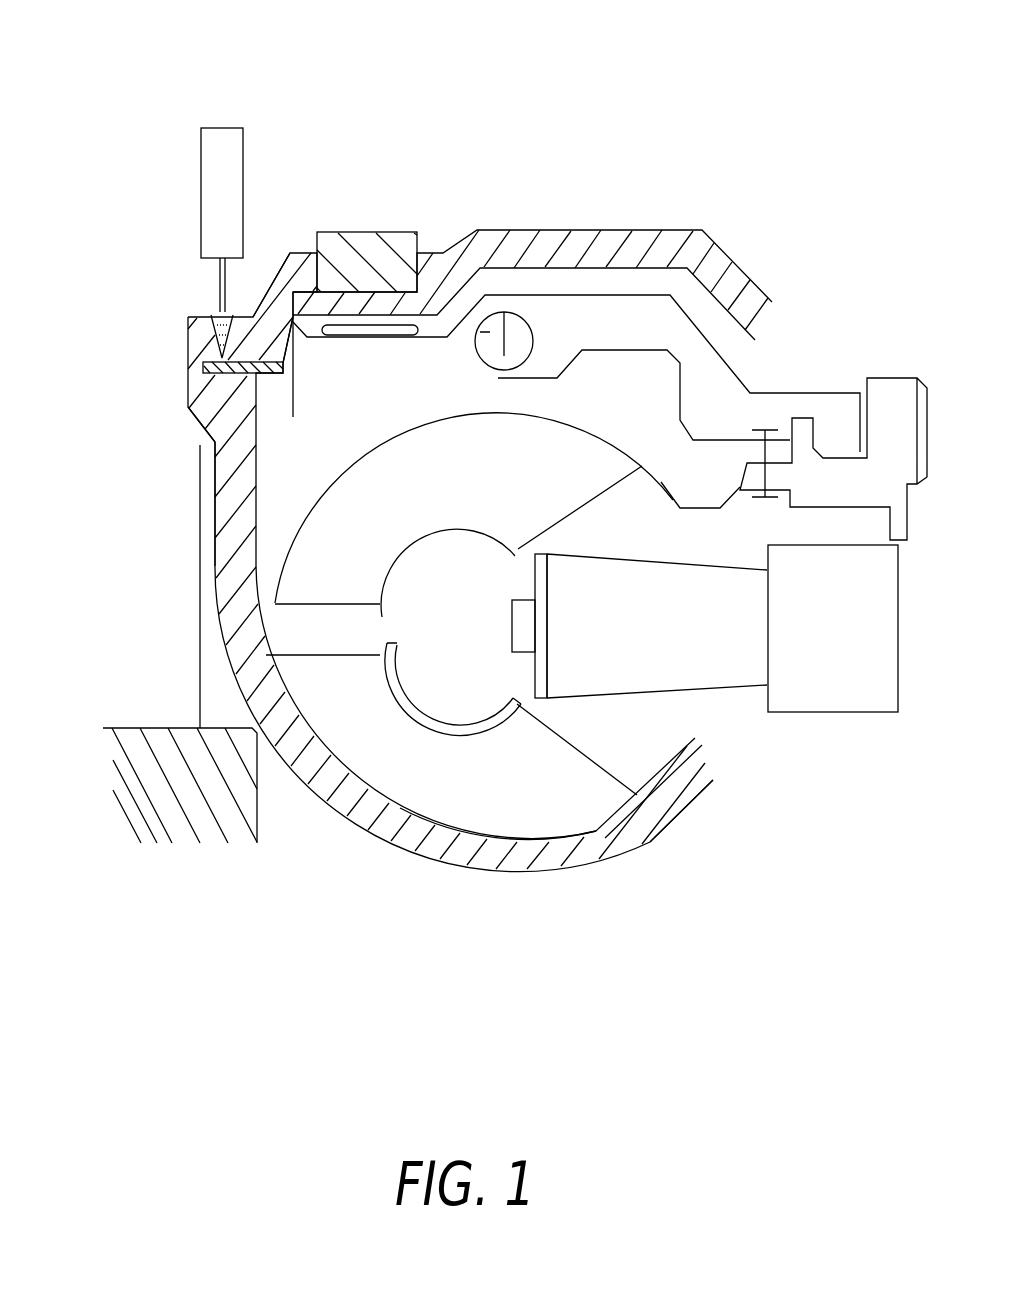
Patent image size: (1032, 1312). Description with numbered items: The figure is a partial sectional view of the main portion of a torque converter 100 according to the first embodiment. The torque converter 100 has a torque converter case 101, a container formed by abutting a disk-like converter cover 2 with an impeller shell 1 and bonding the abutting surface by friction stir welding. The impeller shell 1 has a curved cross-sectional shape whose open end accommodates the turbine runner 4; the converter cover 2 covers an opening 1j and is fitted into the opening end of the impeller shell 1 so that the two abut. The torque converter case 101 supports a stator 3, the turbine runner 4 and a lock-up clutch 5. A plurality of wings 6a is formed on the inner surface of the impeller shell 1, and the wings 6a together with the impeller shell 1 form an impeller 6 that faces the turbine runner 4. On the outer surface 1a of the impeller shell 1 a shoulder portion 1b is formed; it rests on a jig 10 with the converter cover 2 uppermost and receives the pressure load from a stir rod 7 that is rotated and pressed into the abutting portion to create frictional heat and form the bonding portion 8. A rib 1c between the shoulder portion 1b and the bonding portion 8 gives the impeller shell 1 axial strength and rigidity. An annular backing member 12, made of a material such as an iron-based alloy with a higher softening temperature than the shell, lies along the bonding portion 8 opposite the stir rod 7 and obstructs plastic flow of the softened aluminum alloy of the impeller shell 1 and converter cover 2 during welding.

The torque converter 100 is at (440, 138).
The torque converter case 101 is at (507, 952).
The impeller shell 1 is at (430, 866).
The outer surface 1a is at (237, 477).
The shoulder portion 1b is at (200, 713).
The rib 1c is at (197, 550).
The opening 1j is at (299, 258).
The converter cover 2 is at (543, 232).
The stator 3 is at (740, 675).
The turbine runner 4 is at (440, 490).
The lock-up clutch 5 is at (617, 292).
The impeller 6 is at (678, 818).
The wings 6a is at (573, 810).
The stir rod 7 is at (205, 190).
The bonding portion 8 is at (213, 312).
The jig 10 is at (255, 797).
The backing member 12 is at (203, 366).